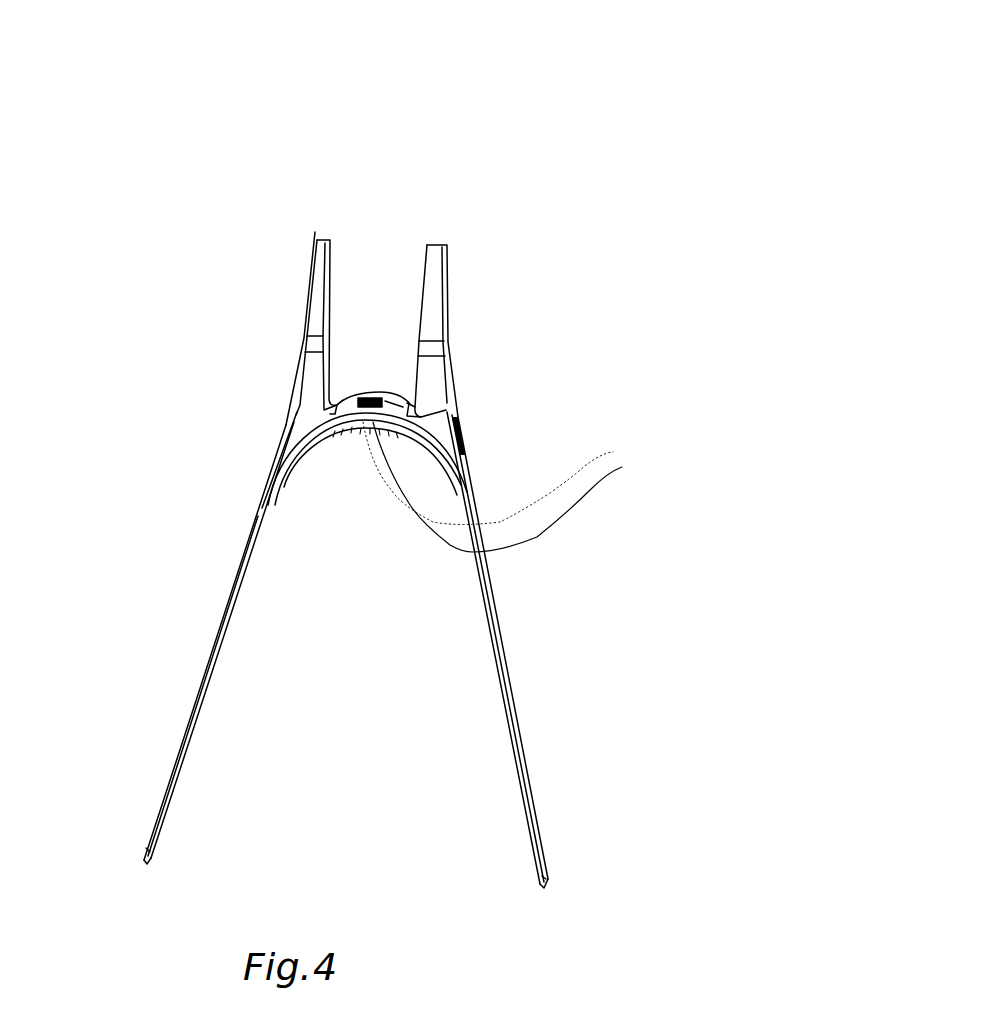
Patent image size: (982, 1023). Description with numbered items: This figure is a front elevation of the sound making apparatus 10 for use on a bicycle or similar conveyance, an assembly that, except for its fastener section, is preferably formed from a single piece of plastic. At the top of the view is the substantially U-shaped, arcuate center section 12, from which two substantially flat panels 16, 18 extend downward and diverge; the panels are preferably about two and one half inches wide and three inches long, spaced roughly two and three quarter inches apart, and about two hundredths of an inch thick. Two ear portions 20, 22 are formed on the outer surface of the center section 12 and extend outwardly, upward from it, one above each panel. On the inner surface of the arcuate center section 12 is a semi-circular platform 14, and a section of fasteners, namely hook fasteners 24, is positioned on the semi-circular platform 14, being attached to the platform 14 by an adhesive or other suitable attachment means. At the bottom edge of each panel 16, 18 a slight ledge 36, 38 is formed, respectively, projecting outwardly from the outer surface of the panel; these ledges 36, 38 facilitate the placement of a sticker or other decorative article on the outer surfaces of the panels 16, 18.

The sound making apparatus 10 is at (723, 89).
The center section 12 is at (352, 397).
The semi-circular platform 14 is at (288, 462).
The panel 16 is at (203, 685).
The panel 18 is at (507, 653).
The ear portion 20 is at (318, 240).
The ear portion 22 is at (443, 244).
The hook fasteners section 24 is at (507, 487).
The ledge 36 is at (143, 847).
The ledge 38 is at (548, 880).